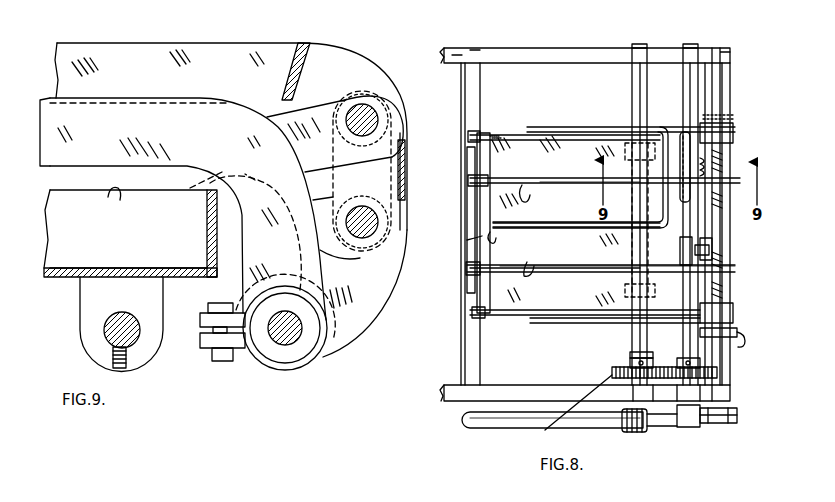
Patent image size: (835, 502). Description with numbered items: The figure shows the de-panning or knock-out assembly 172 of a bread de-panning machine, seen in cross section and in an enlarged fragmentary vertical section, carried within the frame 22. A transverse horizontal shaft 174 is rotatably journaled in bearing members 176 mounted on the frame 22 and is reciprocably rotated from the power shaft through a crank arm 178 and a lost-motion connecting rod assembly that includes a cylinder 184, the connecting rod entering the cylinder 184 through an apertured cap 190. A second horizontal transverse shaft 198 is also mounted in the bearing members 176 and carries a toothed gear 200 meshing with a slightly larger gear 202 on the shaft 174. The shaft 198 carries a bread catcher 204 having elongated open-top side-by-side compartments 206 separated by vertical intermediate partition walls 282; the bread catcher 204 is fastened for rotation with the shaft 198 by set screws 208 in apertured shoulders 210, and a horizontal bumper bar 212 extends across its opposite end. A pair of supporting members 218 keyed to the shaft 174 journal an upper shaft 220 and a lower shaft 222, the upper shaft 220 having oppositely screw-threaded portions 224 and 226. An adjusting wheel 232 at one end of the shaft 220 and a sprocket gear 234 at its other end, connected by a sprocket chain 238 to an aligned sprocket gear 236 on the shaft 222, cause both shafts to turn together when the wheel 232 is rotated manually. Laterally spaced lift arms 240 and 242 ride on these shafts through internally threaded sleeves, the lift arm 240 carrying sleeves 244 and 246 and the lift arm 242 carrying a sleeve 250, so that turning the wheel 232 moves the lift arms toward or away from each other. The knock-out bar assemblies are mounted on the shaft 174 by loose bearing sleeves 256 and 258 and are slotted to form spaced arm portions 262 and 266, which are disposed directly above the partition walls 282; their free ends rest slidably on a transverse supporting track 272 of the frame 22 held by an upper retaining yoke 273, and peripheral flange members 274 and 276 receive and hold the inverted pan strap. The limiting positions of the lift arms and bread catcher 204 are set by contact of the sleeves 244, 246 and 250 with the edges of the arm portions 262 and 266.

In FIG. 8, the frame 22 is at (550, 58).
In FIG. 8, the de-panning or knock-out assembly 172 is at (544, 88).
In FIG. 9, the transverse horizontal shaft 174 is at (292, 342).
In FIG. 8, the transverse horizontal shaft 174 is at (700, 348).
In FIG. 8, the bearing members 176 is at (667, 55).
In FIG. 8, the crank arm 178 is at (712, 424).
In FIG. 8, the cylinder 184 is at (500, 428).
In FIG. 8, the apertured cap 190 is at (640, 432).
In FIG. 9, the second horizontal transverse rotatable shaft 198 is at (130, 322).
In FIG. 8, the second horizontal transverse rotatable shaft 198 is at (628, 356).
In FIG. 8, the toothed gear 200 is at (572, 412).
In FIG. 8, the gear 202 is at (720, 373).
In FIG. 9, the bread catcher 204 is at (72, 277).
In FIG. 8, the bread catcher 204 is at (520, 296).
In FIG. 9, the compartments 206 is at (150, 236).
In FIG. 8, the compartments 206 is at (584, 156).
In FIG. 9, the set screws 208 is at (112, 355).
In FIG. 9, the apertured shoulders 210 is at (145, 352).
In FIG. 8, the apertured shoulders 210 is at (598, 157).
In FIG. 8, the horizontal bumper bar 212 is at (492, 300).
In FIG. 9, the supporting members 218 is at (360, 322).
In FIG. 8, the supporting members 218 is at (736, 134).
In FIG. 9, the upper transverse horizontal shaft 220 is at (363, 118).
In FIG. 9, the lower transverse horizontal shaft 222 is at (390, 258).
In FIG. 8, the screw-threaded portion 224 is at (735, 246).
In FIG. 8, the screw-threaded portion 226 is at (722, 170).
In FIG. 8, the adjusting wheel 232 is at (742, 333).
In FIG. 9, the sprocket gear 234 is at (405, 107).
In FIG. 8, the sprocket gear 234 is at (737, 116).
In FIG. 9, the sprocket gear 236 is at (393, 207).
In FIG. 9, the sprocket chain 238 is at (405, 177).
In FIG. 8, the lift arm 240 is at (567, 272).
In FIG. 9, the lift arm 242 is at (266, 115).
In FIG. 8, the lift arm 242 is at (553, 184).
In FIG. 8, the threaded sleeve 244 is at (740, 269).
In FIG. 9, the threaded sleeve 246 is at (315, 100).
In FIG. 8, the threaded sleeve 246 is at (742, 182).
In FIG. 9, the sleeve 250 is at (312, 257).
In FIG. 8, the loose bearing sleeve 256 is at (720, 250).
In FIG. 9, the loose bearing sleeve 258 is at (278, 360).
In FIG. 8, the loose bearing sleeve 258 is at (703, 168).
In FIG. 8, the arm portions 262 is at (528, 267).
In FIG. 9, the arm portions 266 is at (138, 98).
In FIG. 8, the arm portions 266 is at (520, 172).
In FIG. 9, the transverse supporting track 272 is at (222, 332).
In FIG. 8, the transverse supporting track 272 is at (476, 117).
In FIG. 8, the upper retaining yoke 273 is at (467, 246).
In FIG. 8, the peripheral flange member 274 is at (560, 325).
In FIG. 9, the peripheral flange member 276 is at (216, 52).
In FIG. 8, the peripheral flange member 276 is at (572, 127).
In FIG. 9, the vertical intermediate partition walls 282 is at (127, 200).